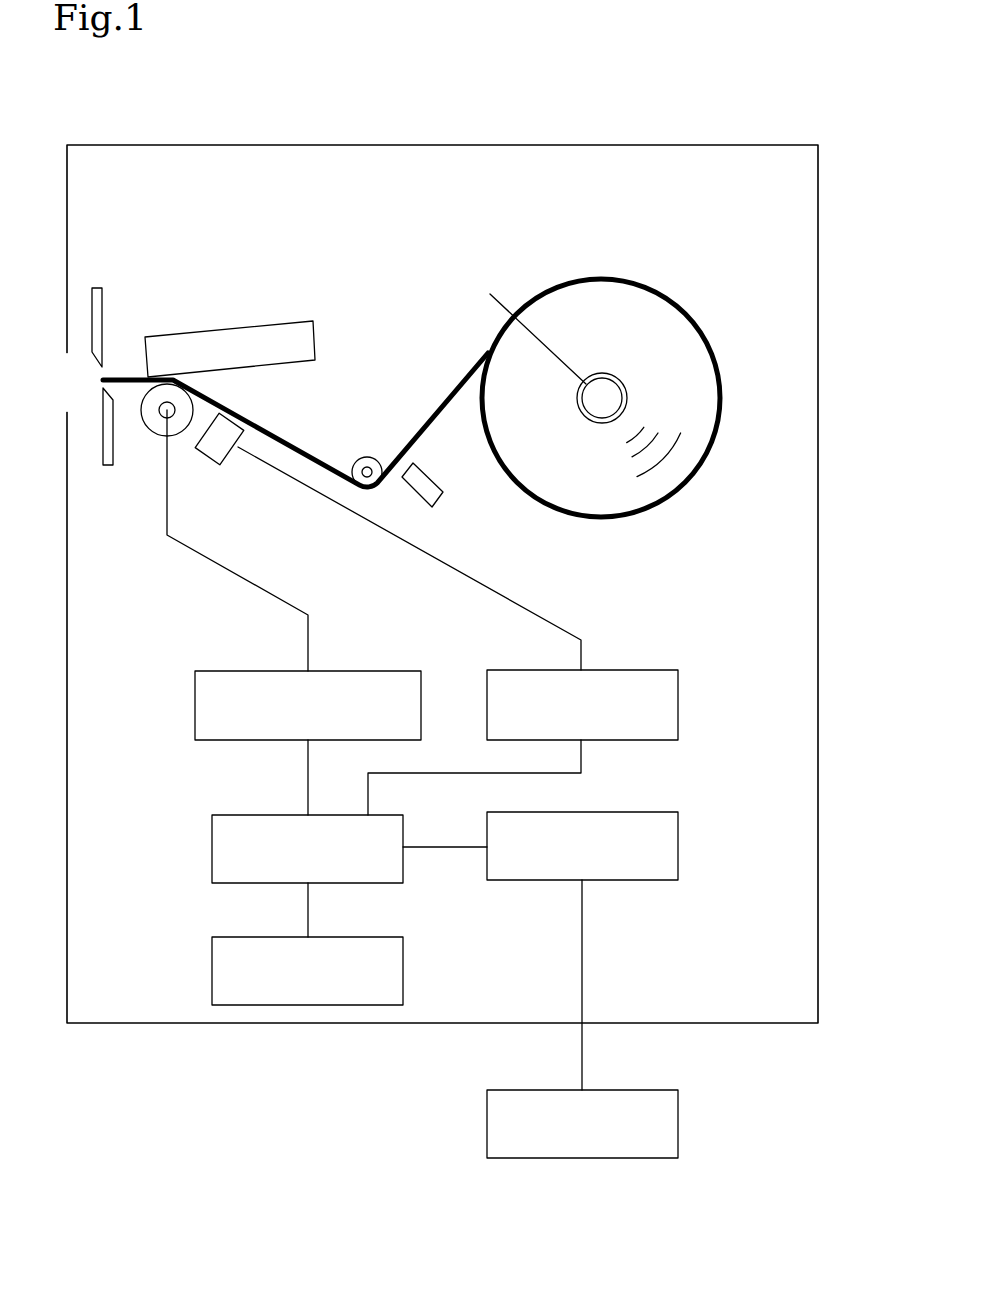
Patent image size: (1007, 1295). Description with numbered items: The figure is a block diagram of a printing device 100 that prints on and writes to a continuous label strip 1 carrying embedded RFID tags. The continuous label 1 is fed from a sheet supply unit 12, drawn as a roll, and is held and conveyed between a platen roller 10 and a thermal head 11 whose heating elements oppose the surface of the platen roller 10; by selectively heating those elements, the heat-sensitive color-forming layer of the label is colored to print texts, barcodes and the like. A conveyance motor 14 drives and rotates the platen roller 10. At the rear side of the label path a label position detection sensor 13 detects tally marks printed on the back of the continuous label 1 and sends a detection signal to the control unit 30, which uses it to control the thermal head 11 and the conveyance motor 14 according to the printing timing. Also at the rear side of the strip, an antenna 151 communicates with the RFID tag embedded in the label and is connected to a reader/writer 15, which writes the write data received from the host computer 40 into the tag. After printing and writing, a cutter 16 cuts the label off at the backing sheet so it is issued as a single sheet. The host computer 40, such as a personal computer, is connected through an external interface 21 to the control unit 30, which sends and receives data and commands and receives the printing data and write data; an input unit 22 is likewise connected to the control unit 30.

The printing device 100 is at (533, 145).
The continuous label strip 1 is at (283, 440).
The sheet supply unit 12 is at (490, 294).
The thermal head 11 is at (257, 325).
The platen roller 10 is at (160, 433).
The cutter 16 is at (100, 288).
The antenna 151 is at (222, 463).
The label position detection sensor 13 is at (443, 497).
The conveyance motor 14 is at (350, 671).
The reader/writer 15 is at (640, 670).
The external interface 21 is at (640, 812).
The control unit 30 is at (212, 838).
The input unit 22 is at (367, 937).
The host computer 40 is at (640, 1090).